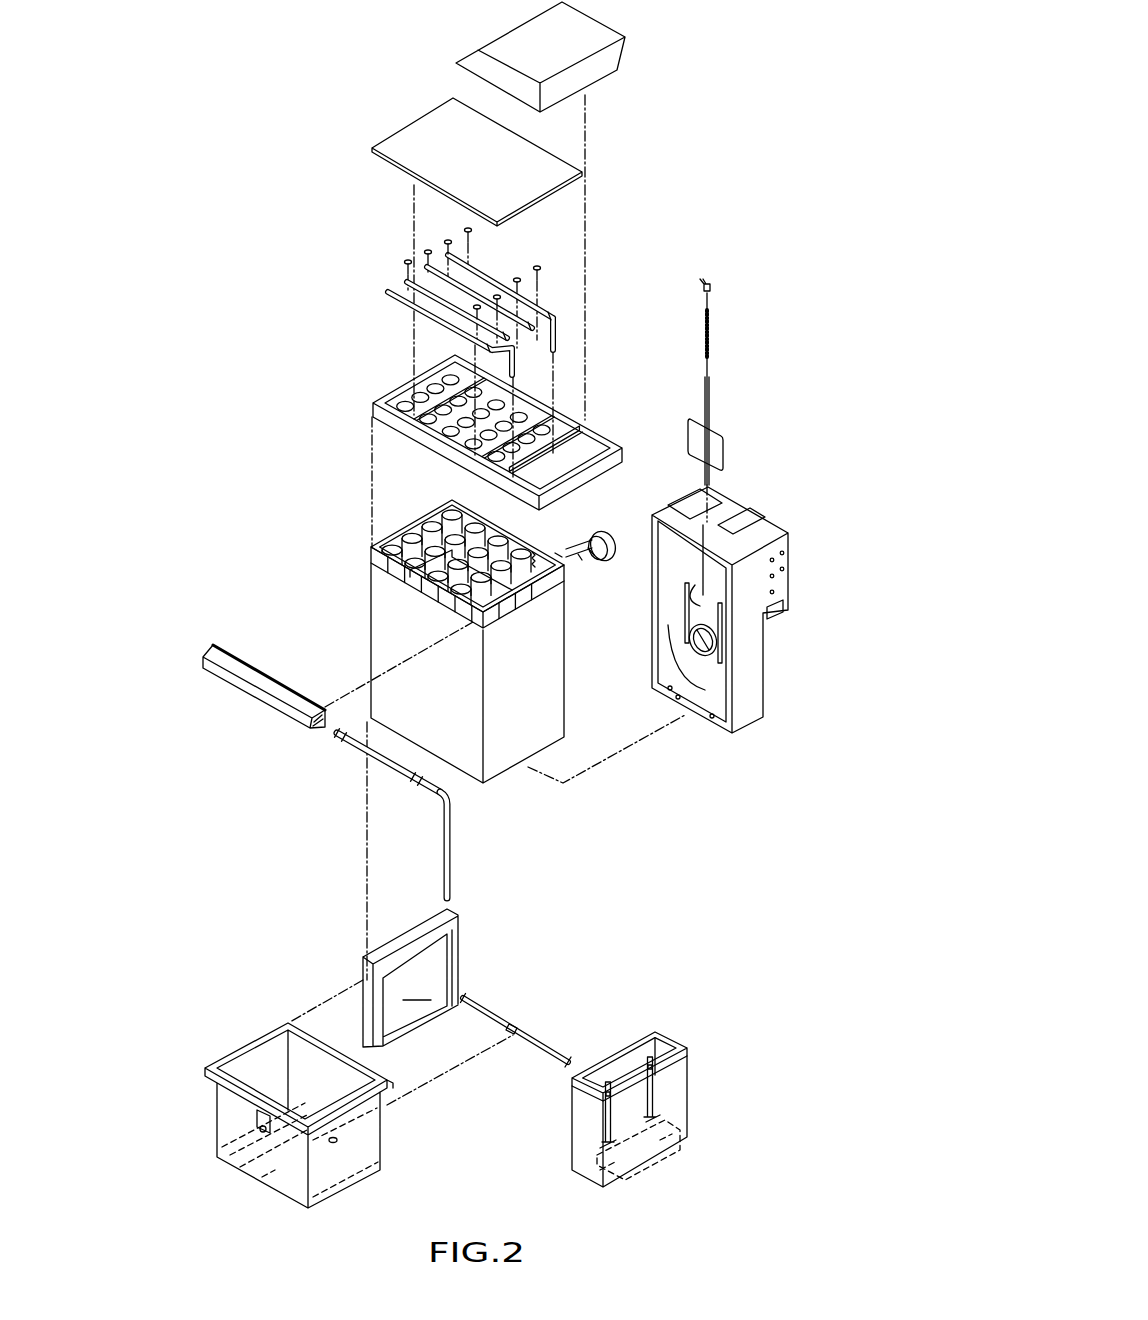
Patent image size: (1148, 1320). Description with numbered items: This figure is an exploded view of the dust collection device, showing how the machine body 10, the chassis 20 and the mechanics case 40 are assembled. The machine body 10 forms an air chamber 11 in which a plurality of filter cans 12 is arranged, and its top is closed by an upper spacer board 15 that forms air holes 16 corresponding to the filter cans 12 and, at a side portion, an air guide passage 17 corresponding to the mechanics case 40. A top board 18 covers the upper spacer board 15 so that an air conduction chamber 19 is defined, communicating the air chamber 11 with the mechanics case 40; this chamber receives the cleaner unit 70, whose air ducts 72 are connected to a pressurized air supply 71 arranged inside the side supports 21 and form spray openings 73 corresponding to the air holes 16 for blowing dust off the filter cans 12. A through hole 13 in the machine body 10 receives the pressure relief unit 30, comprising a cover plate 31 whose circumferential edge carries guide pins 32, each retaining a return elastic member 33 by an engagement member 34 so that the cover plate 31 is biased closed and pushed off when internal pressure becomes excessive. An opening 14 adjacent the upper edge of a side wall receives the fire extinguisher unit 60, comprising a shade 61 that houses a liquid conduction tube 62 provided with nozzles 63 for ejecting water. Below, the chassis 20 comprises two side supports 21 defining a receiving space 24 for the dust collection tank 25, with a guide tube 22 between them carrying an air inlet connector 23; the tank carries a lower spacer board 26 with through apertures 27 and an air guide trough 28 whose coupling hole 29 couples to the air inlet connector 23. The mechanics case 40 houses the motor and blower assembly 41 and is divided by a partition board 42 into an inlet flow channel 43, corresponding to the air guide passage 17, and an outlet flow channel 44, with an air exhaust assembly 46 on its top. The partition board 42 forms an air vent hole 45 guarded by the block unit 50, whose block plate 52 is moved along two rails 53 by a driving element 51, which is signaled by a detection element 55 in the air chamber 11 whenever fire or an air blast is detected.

The machine body 10 is at (368, 617).
The air chamber 11 is at (440, 512).
The filter cans 12 is at (402, 528).
The through hole 13 is at (557, 553).
The opening 14 is at (372, 572).
The upper spacer board 15 is at (372, 407).
The air holes 16 is at (412, 404).
The air guide passage 17 is at (580, 420).
The top board 18 is at (430, 113).
The air conduction chamber 19 is at (513, 410).
The chassis 20 is at (681, 1126).
The side supports 21 is at (388, 947).
The guide tube 22 is at (532, 1050).
The air inlet connector 23 is at (513, 1035).
The receiving space 24 is at (417, 987).
The dust collection tank 25 is at (287, 1104).
The lower spacer board 26 is at (260, 1133).
The through apertures 27 is at (258, 1120).
The air guide trough 28 is at (263, 1165).
The coupling hole 29 is at (363, 1177).
The pressure relief unit 30 is at (616, 545).
The cover plate 31 is at (613, 543).
The guide pins 32 is at (606, 560).
The return elastic member 33 is at (595, 567).
The engagement member 34 is at (587, 572).
The mechanics case 40 is at (726, 590).
The motor and blower assembly 41 is at (785, 607).
The partition board 42 is at (678, 538).
The inlet flow channel 43 is at (665, 622).
The outlet flow channel 44 is at (745, 533).
The air vent hole 45 is at (680, 693).
The air exhaust assembly 46 is at (618, 50).
The block unit 50 is at (734, 358).
The driving element 51 is at (715, 282).
The block plate 52 is at (690, 433).
The rails 53 is at (733, 638).
The detection element 55 is at (536, 550).
The fire extinguisher unit 60 is at (306, 771).
The shade 61 is at (233, 683).
The liquid conduction tube 62 is at (352, 747).
The nozzles 63 is at (412, 783).
The cleaner unit 70 is at (667, 1152).
The pressurized air supply 71 is at (623, 1152).
The air ducts 72 is at (545, 308).
The spray openings 73 is at (483, 275).